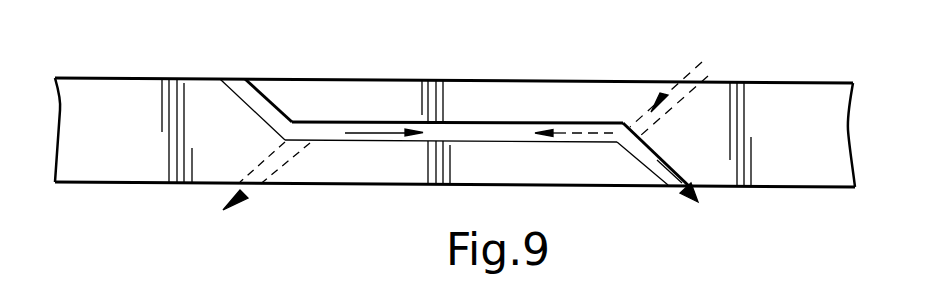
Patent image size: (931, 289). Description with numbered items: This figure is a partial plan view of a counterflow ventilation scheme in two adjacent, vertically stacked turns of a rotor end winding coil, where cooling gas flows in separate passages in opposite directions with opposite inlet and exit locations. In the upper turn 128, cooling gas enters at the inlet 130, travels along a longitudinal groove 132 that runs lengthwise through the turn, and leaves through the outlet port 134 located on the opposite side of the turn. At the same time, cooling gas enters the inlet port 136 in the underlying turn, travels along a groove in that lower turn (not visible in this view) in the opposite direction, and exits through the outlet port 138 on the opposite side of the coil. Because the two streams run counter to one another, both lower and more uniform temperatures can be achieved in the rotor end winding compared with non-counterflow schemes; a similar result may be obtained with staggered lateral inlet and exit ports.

The upper turn 128 is at (128, 92).
The inlet 130 is at (262, 105).
The longitudinal groove 132 is at (497, 135).
The outlet port 134 is at (645, 160).
The inlet port 136 is at (668, 108).
The outlet port 138 is at (290, 153).